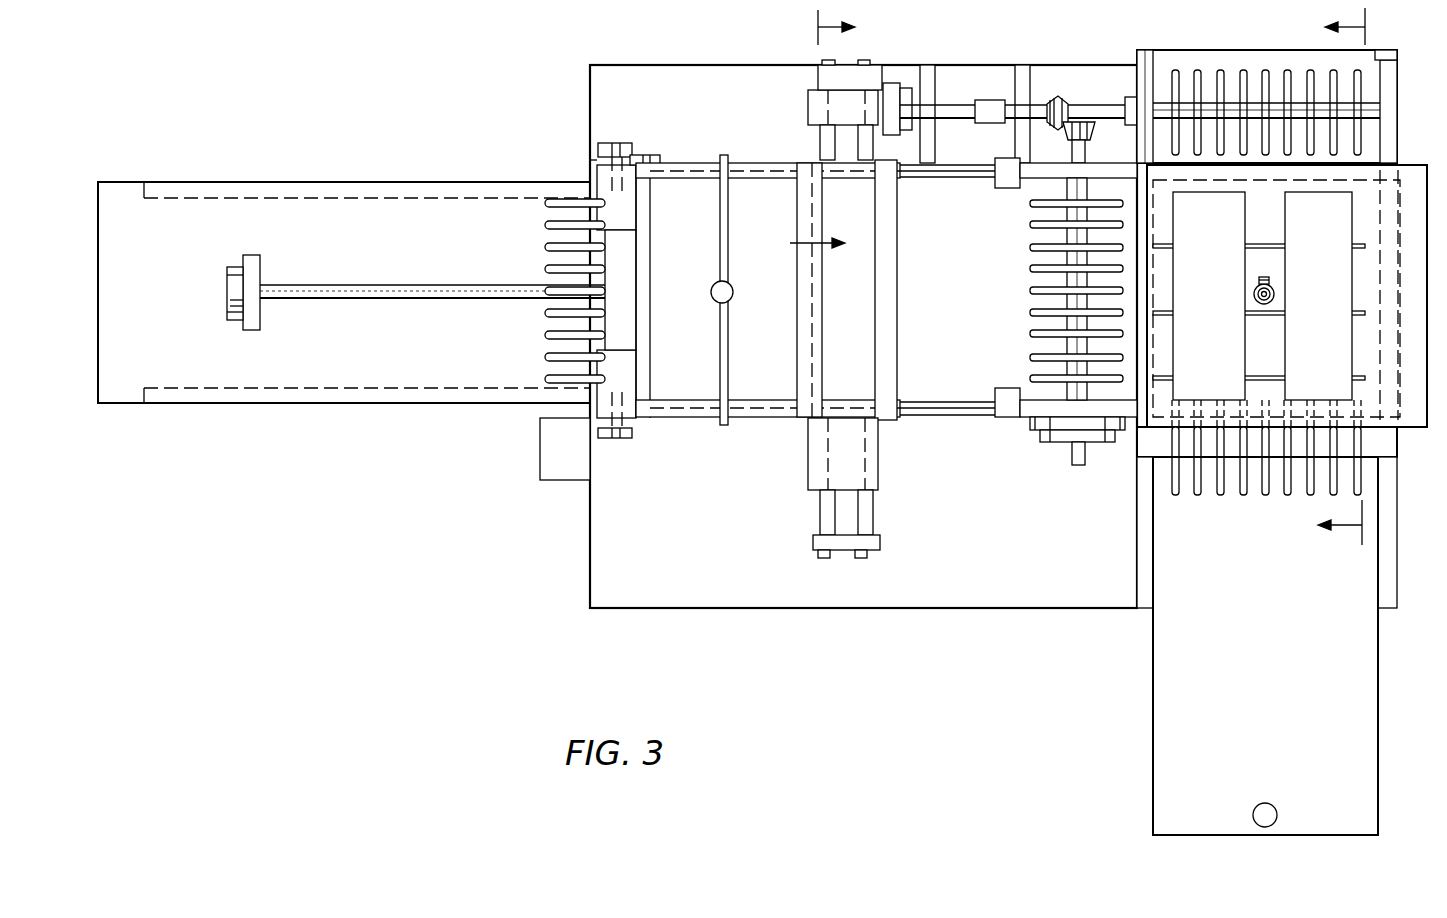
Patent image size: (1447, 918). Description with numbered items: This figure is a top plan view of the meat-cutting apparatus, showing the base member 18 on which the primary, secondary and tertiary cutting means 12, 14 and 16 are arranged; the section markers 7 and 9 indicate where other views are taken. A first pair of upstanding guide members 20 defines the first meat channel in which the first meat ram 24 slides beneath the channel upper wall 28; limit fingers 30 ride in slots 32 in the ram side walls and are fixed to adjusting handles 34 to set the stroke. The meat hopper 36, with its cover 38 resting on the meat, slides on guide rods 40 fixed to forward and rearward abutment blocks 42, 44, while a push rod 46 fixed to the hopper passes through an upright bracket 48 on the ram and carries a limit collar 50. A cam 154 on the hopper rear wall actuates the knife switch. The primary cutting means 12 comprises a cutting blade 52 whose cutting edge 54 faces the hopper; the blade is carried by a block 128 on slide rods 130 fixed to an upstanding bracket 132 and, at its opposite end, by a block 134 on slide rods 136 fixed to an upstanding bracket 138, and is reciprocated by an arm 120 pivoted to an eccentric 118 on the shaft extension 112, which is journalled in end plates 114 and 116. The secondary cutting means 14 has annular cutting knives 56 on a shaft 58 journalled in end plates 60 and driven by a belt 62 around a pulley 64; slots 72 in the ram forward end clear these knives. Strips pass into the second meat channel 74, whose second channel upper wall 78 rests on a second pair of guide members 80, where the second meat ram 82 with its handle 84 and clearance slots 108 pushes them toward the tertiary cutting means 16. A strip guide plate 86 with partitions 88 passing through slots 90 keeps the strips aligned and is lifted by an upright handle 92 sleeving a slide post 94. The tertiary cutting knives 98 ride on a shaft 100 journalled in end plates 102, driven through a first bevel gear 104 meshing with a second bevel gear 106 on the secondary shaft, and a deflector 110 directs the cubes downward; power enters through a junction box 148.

The section line 7 is at (822, 137).
The section line 9 is at (1351, 277).
The primary cutting means 12 is at (912, 264).
The secondary cutting means 14 is at (1085, 512).
The tertiary cutting means 16 is at (1405, 105).
The base member 18 is at (706, 561).
The guide members 20 is at (960, 167).
The first meat ram 24 is at (157, 258).
The channel upper wall 28 is at (998, 318).
The limit fingers 30 is at (600, 160).
The slots 32 is at (228, 196).
The adjusting handles 34 is at (620, 143).
The meat hopper 36 is at (700, 163).
The cover 38 is at (779, 348).
The guide rods 40 is at (963, 172).
The forward abutment blocks 42 is at (1012, 188).
The rearward abutment blocks 44 is at (618, 216).
The push rod 46 is at (405, 290).
The upright bracket 48 is at (260, 266).
The limit collar 50 is at (226, 274).
The cutting blade 52 is at (860, 320).
The cutting edge 54 is at (812, 366).
The cutting knives 56 is at (1030, 291).
The shaft 58 is at (1080, 465).
The end plates 60 is at (1118, 170).
The belt 62 is at (1105, 442).
The pulley 64 is at (1040, 440).
The slots 72 is at (545, 315).
The second meat channel 74 is at (1377, 187).
The second channel upper wall 78 is at (1385, 445).
The guide members 80 is at (1145, 585).
The second meat ram 82 is at (1297, 685).
The handle 84 is at (1270, 810).
The strip guide plate 86 is at (1410, 322).
The partitions 88 is at (1295, 244).
The slots 90 is at (1310, 322).
The upright handle 92 is at (1254, 296).
The upright slide post 94 is at (1256, 285).
The cutting knives 98 is at (1220, 70).
The shaft 100 is at (1112, 110).
The end plates 102 is at (1143, 72).
The first bevel gear 104 is at (1058, 96).
The second bevel gear 106 is at (1085, 120).
The slots 108 is at (1240, 497).
The deflector 110 is at (1287, 62).
The shaft extension 112 is at (953, 110).
The end plate 114 is at (1022, 72).
The end plate 116 is at (926, 72).
The eccentric 118 is at (906, 88).
The arm 120 is at (890, 95).
The block 128 is at (808, 105).
The slide rods 130 is at (830, 85).
The upstanding bracket 132 is at (845, 70).
The block 134 is at (810, 463).
The slide rods 136 is at (835, 516).
The upstanding bracket 138 is at (860, 556).
The junction box 148 is at (540, 451).
The cam 154 is at (656, 158).